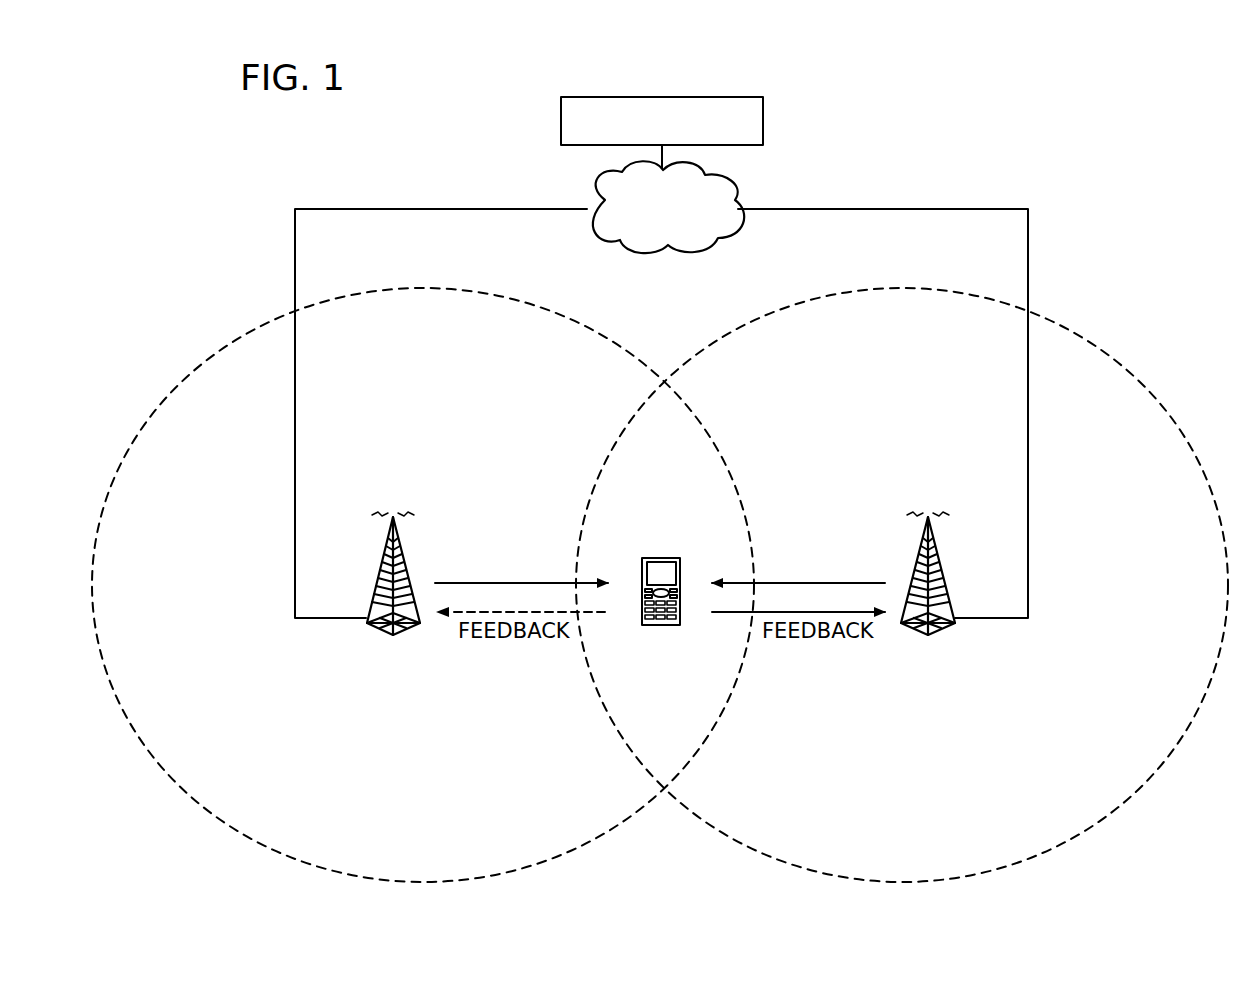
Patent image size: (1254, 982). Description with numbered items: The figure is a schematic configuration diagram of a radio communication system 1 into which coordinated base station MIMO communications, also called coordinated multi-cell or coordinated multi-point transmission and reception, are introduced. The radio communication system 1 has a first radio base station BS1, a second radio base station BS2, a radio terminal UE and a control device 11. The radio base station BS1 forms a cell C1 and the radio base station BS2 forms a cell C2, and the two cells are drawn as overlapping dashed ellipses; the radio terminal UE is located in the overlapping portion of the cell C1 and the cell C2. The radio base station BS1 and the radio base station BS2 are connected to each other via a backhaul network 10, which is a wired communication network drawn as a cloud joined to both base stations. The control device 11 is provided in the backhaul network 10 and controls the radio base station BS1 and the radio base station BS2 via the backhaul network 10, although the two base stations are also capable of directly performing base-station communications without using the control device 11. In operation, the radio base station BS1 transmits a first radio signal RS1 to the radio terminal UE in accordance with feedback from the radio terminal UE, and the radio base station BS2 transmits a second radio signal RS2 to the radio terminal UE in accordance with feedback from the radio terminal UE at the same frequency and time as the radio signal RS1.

The radio communication system 1 is at (958, 142).
The backhaul network 10 is at (735, 195).
The control device 11 is at (763, 118).
The cell C1 is at (594, 332).
The cell C2 is at (1080, 335).
The radio base station BS1 is at (400, 532).
The radio base station BS2 is at (935, 532).
The radio terminal UE is at (664, 558).
The radio signal RS1 is at (521, 570).
The radio signal RS2 is at (798, 570).